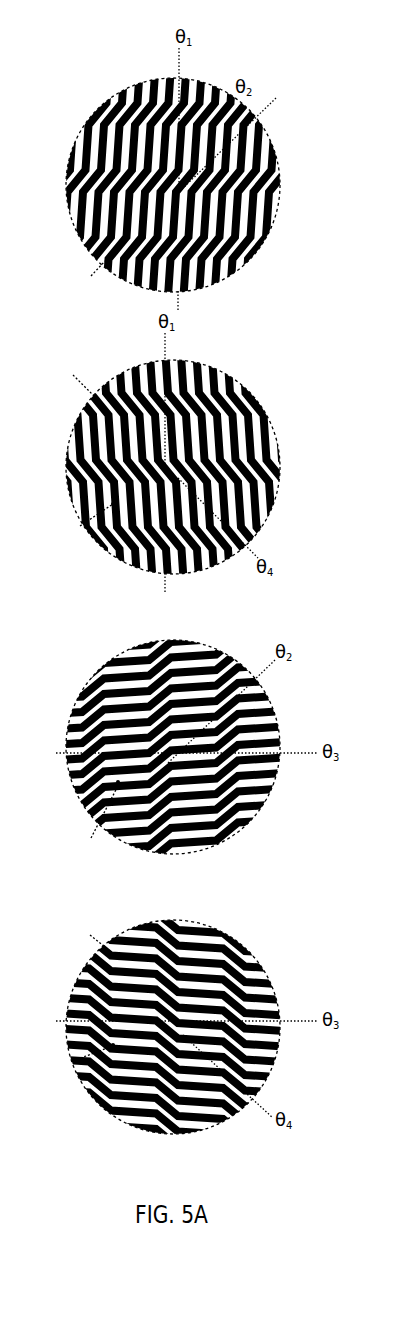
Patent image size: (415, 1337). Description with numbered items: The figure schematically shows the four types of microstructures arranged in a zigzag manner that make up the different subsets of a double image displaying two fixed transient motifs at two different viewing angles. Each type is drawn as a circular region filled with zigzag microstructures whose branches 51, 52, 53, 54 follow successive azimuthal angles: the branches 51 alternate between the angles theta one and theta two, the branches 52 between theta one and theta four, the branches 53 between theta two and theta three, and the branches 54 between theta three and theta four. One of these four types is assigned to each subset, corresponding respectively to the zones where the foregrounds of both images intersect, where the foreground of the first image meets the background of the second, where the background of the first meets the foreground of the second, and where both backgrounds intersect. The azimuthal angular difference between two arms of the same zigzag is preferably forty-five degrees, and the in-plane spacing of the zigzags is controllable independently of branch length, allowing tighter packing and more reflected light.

The branches 51 is at (76, 232).
The branches 52 is at (76, 505).
The branches 53 is at (76, 793).
The branches 54 is at (72, 1070).